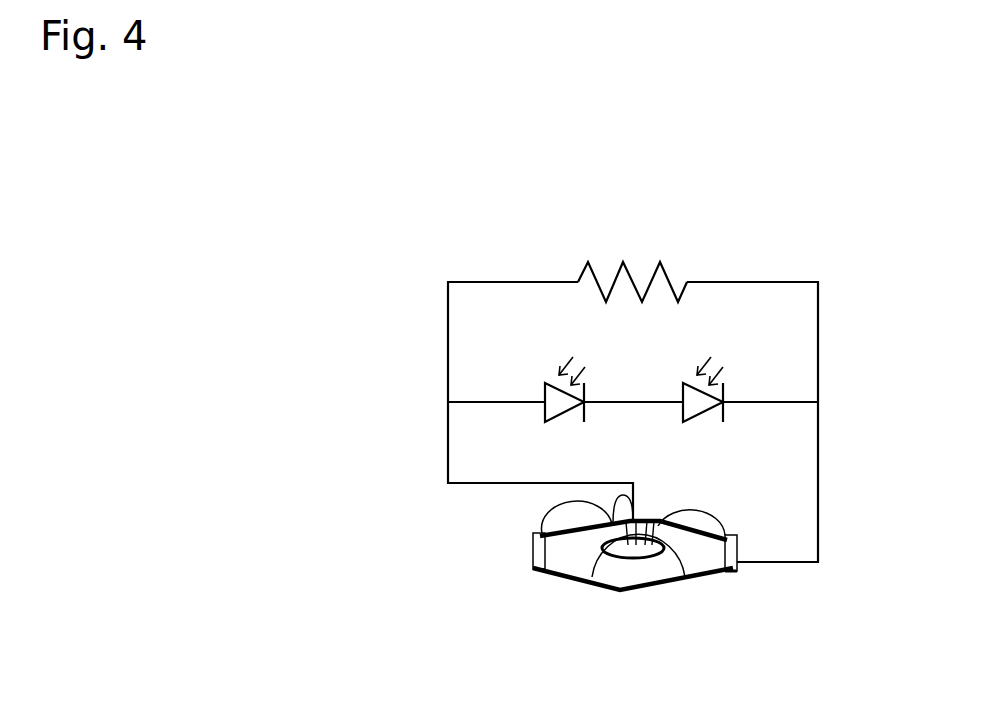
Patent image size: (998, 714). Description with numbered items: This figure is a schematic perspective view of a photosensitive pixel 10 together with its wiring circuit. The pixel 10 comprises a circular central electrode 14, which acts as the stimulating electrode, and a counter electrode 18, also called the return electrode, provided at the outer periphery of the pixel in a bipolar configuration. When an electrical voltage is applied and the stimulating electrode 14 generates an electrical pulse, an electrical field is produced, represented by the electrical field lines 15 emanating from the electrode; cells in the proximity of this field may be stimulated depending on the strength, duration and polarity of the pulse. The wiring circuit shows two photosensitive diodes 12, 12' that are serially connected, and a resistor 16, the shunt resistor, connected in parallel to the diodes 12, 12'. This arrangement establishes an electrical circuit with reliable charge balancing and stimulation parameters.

The photosensitive pixel 10 is at (563, 599).
The photosensitive diode 12 is at (825, 356).
The photosensitive diode 12' is at (466, 351).
The central electrode 14 is at (620, 548).
The electrical field lines 15 is at (683, 560).
The resistor 16 is at (660, 262).
The counter electrode 18 is at (722, 573).